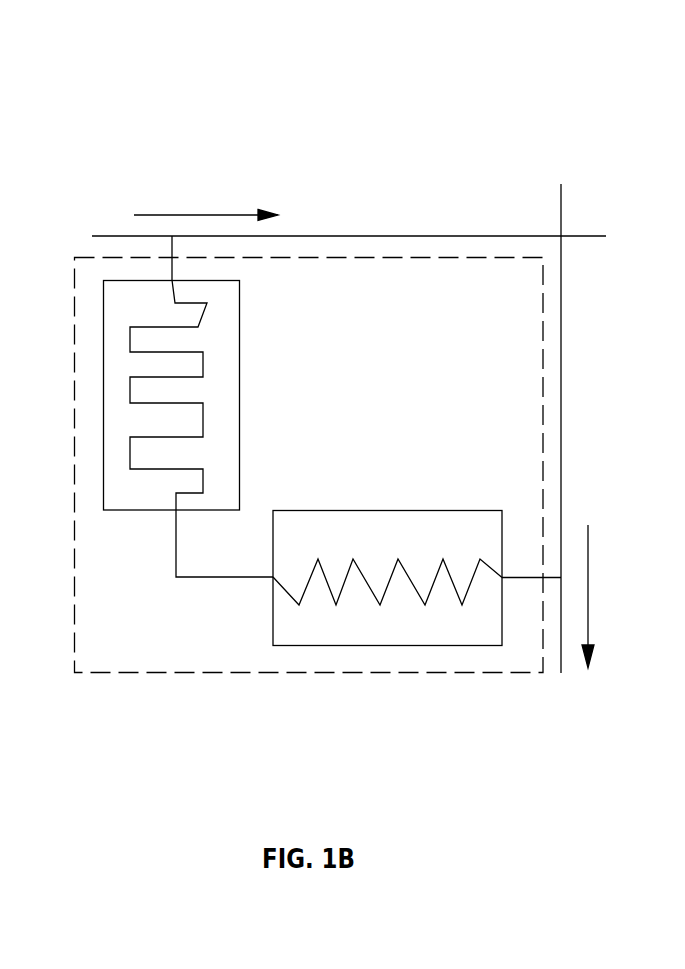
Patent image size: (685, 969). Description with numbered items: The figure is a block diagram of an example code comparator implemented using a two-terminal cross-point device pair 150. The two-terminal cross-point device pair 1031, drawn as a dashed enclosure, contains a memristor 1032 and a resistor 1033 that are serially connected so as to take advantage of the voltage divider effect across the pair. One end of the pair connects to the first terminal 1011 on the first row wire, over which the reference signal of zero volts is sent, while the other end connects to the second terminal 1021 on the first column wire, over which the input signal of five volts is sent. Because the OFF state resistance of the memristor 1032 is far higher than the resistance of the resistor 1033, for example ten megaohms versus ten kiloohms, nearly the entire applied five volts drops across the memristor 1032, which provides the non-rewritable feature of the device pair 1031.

The two-terminal cross-point device pair 150 is at (347, 48).
The first terminal 1011 is at (340, 236).
The second terminal 1021 is at (560, 212).
The two-terminal cross-point device pair 1031 is at (132, 672).
The memristor 1032 is at (241, 365).
The resistor 1033 is at (344, 510).